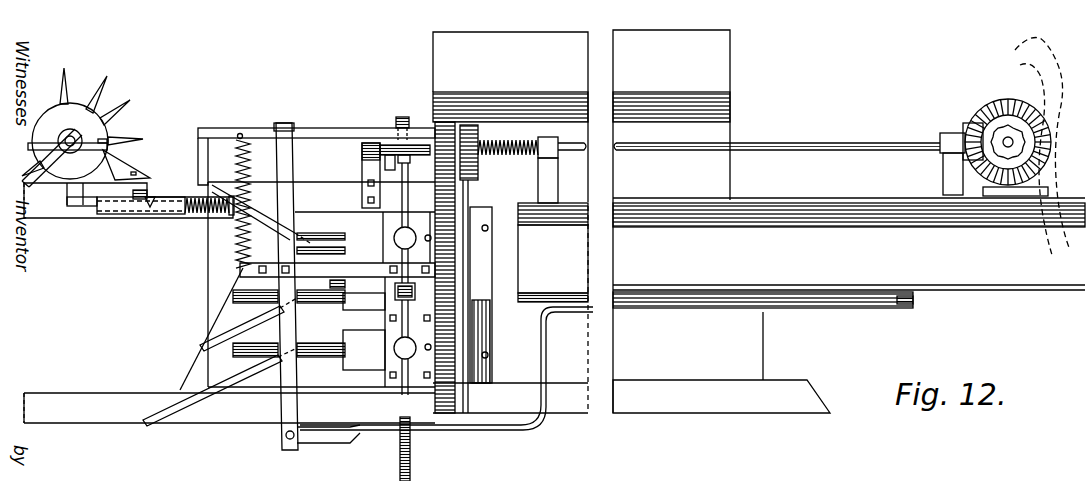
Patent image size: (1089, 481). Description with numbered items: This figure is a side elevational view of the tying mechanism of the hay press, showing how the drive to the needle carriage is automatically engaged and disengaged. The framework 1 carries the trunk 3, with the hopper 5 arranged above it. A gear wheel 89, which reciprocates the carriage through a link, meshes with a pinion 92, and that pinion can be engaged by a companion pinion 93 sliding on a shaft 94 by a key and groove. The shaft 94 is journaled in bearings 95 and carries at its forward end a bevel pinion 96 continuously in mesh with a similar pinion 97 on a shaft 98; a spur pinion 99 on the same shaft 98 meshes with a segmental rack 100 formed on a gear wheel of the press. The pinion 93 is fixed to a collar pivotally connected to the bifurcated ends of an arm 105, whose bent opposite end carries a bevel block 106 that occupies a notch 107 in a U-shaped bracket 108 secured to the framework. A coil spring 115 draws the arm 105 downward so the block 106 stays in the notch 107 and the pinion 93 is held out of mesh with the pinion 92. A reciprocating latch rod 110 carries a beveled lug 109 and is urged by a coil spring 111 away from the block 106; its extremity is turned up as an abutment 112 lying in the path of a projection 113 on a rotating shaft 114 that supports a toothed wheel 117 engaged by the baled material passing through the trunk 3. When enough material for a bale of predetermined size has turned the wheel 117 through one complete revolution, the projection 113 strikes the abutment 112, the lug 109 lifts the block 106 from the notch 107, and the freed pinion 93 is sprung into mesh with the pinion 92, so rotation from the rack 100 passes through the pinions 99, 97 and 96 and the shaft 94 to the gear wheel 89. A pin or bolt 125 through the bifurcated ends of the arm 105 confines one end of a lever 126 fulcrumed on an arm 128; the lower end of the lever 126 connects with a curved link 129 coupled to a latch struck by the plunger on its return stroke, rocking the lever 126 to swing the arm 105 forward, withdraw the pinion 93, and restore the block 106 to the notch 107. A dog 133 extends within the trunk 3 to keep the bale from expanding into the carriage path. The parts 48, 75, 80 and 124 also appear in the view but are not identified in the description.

The framework 1 is at (966, 282).
The trunk 3 is at (127, 380).
The hopper 5 is at (732, 70).
The dashed member 48 is at (1076, 270).
The dashed member 75 is at (1018, 48).
The adjusting screw 80 is at (402, 116).
The gear wheel 89 is at (478, 432).
The pinion 92 is at (445, 122).
The companion pinion 93 is at (478, 125).
The shaft 94 is at (773, 141).
The bearings 95 is at (550, 203).
The bevel pinion 96 is at (962, 128).
The bevel pinion 97 is at (1000, 110).
The shaft 98 is at (1042, 158).
The spur pinion 99 is at (1044, 138).
The segmental rack 100 is at (1020, 75).
The arm 105 is at (228, 129).
The bevel block 106 is at (147, 190).
The notch 107 is at (528, 155).
The U-shaped bracket 108 is at (130, 219).
The beveled lug 109 is at (150, 200).
The latch rod 110 is at (88, 220).
The coil spring 111 is at (195, 216).
The abutment 112 is at (63, 200).
The projection 113 is at (30, 214).
The rotating shaft 114 is at (110, 93).
The coil spring 115 is at (247, 224).
The toothed wheel 117 is at (90, 77).
The rods 124 is at (200, 343).
The pin or bolt 125 is at (297, 133).
The lever 126 is at (293, 163).
The arm 128 is at (355, 263).
The curved link 129 is at (541, 428).
The dog 133 is at (320, 355).